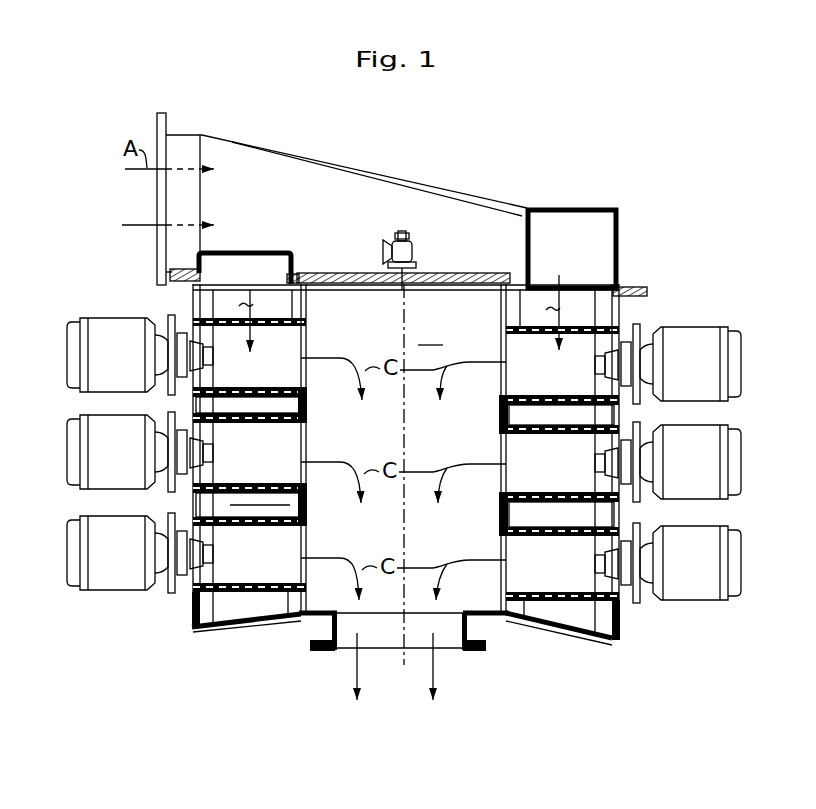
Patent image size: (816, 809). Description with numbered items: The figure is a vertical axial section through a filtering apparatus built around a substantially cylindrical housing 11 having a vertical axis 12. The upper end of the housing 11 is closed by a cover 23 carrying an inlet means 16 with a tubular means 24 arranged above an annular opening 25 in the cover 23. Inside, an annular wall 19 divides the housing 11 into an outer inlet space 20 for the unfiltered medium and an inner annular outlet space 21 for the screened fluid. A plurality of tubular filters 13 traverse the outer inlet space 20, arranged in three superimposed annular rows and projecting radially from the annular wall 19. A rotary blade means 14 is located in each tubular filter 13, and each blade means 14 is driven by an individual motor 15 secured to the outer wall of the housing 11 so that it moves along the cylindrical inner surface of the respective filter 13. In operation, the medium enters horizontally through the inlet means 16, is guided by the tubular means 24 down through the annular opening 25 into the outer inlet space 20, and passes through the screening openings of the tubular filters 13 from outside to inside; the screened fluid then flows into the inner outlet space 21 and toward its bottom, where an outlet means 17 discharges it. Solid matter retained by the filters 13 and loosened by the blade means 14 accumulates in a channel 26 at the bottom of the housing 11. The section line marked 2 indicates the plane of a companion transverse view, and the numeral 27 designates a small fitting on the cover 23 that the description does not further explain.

The section line 2- 2 is at (108, 351).
The housing 11 is at (184, 608).
The vertical axis 12 is at (406, 429).
The tubular filter 13 is at (275, 402).
The rotary blade means 14 is at (282, 390).
The motor 15 is at (120, 324).
The inlet means 16 is at (150, 206).
The outlet means 17 is at (458, 641).
The annular wall 19 is at (282, 508).
The outer inlet space 20 is at (300, 303).
The inner annular outlet space 21 is at (403, 448).
The cover 23 is at (470, 273).
The tubular means 24 is at (280, 252).
The annular opening 25 is at (583, 292).
The channel 26 is at (240, 608).
The valve 27 is at (408, 249).